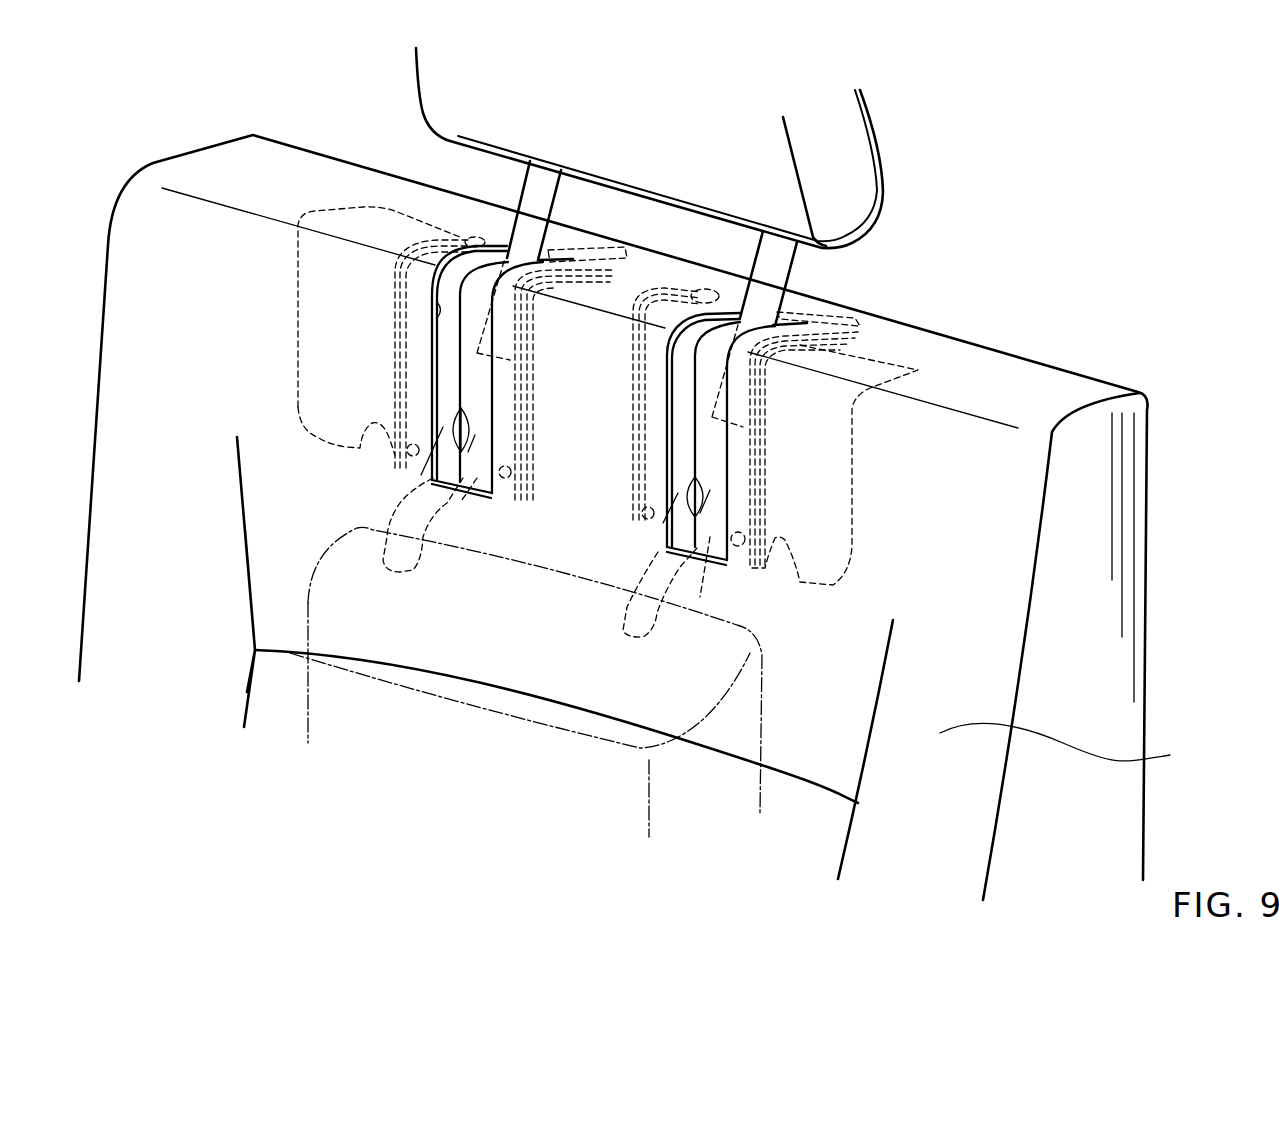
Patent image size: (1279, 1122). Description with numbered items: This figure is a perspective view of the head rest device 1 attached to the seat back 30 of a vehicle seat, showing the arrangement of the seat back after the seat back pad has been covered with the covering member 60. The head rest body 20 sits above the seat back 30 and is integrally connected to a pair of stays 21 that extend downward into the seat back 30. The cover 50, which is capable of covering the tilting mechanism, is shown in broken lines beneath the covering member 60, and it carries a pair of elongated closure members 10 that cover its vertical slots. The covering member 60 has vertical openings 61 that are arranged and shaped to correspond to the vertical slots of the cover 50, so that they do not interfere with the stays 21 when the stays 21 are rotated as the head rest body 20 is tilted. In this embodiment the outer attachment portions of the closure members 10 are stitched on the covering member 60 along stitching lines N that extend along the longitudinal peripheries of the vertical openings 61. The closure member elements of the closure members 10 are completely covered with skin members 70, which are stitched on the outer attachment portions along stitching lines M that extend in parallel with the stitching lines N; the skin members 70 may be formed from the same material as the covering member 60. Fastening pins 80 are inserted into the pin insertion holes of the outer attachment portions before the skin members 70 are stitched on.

The head rest device 1 is at (641, 469).
The closure members 10 is at (608, 396).
The head rest body 20 is at (649, 143).
The stays 21 is at (668, 291).
The seat back 30 is at (613, 517).
The cover 50 is at (526, 466).
The covering member 60 is at (1072, 748).
The vertical openings 61 is at (537, 405).
The skin members 70 is at (546, 543).
The fastening pins 80 is at (638, 385).
The stitching lines M is at (594, 468).
The stitching lines N is at (587, 476).